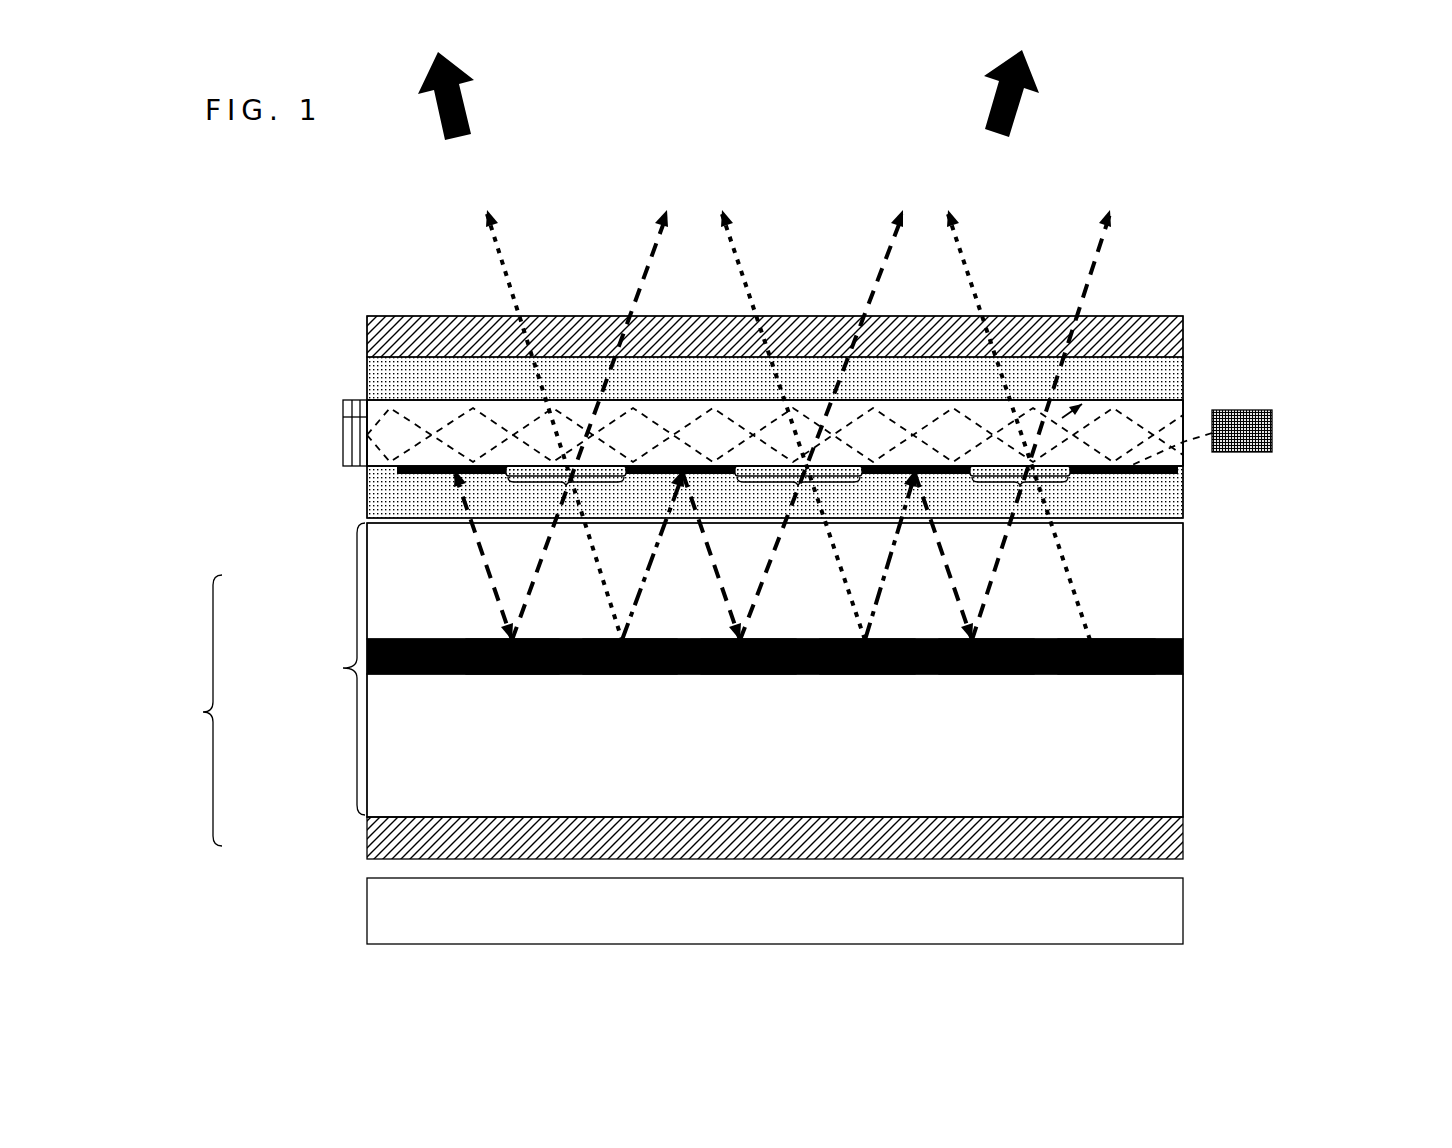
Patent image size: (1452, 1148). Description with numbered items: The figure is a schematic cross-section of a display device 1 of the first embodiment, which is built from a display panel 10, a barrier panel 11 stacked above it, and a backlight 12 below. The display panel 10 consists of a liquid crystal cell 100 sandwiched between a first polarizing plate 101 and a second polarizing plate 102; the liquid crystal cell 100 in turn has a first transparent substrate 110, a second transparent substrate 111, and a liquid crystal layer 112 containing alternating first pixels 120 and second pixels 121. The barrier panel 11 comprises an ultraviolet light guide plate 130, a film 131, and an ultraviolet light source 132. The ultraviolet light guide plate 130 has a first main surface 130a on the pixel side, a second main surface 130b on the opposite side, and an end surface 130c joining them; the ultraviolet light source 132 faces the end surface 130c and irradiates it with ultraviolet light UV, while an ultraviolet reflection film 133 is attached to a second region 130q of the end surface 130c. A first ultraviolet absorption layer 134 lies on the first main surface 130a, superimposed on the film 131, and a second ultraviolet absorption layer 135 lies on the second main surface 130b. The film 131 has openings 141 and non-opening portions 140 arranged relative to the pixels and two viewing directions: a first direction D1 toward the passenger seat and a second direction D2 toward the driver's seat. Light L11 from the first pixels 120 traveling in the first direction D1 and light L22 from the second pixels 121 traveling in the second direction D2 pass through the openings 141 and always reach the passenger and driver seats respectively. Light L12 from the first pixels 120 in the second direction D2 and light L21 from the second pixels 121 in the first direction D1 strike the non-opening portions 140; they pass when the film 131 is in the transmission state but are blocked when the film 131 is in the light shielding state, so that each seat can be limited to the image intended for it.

The display device 1 is at (1228, 268).
The display panel 10 is at (195, 710).
The barrier panel 11 is at (1188, 361).
The backlight 12 is at (367, 913).
The liquid crystal cell 100 is at (343, 668).
The first polarizing plate 101 is at (367, 337).
The second polarizing plate 102 is at (367, 839).
The first transparent substrate 110 is at (1183, 583).
The second transparent substrate 111 is at (1183, 748).
The liquid crystal layer 112 is at (1183, 658).
The first pixels 120 is at (514, 672).
The second pixels 121 is at (631, 672).
The ultraviolet light guide plate 130 is at (1183, 455).
The first main surface 130a is at (748, 468).
The second main surface 130b is at (812, 400).
The end surface 130c is at (1183, 412).
The second region 130q is at (343, 432).
The film 131 is at (1165, 478).
The ultraviolet light source 132 is at (1272, 432).
The ultraviolet reflection film 133 is at (343, 405).
The first ultraviolet absorption layer 134 is at (1183, 519).
The second ultraviolet absorption layer 135 is at (1183, 380).
The non-opening portions 140 is at (440, 478).
The openings 141 is at (788, 490).
The first direction D1 is at (1023, 102).
The second direction D2 is at (469, 96).
The light L11 is at (648, 267).
The light L12 is at (486, 571).
The light L21 is at (642, 595).
The light L22 is at (535, 246).
The ultraviolet light UV is at (1055, 425).